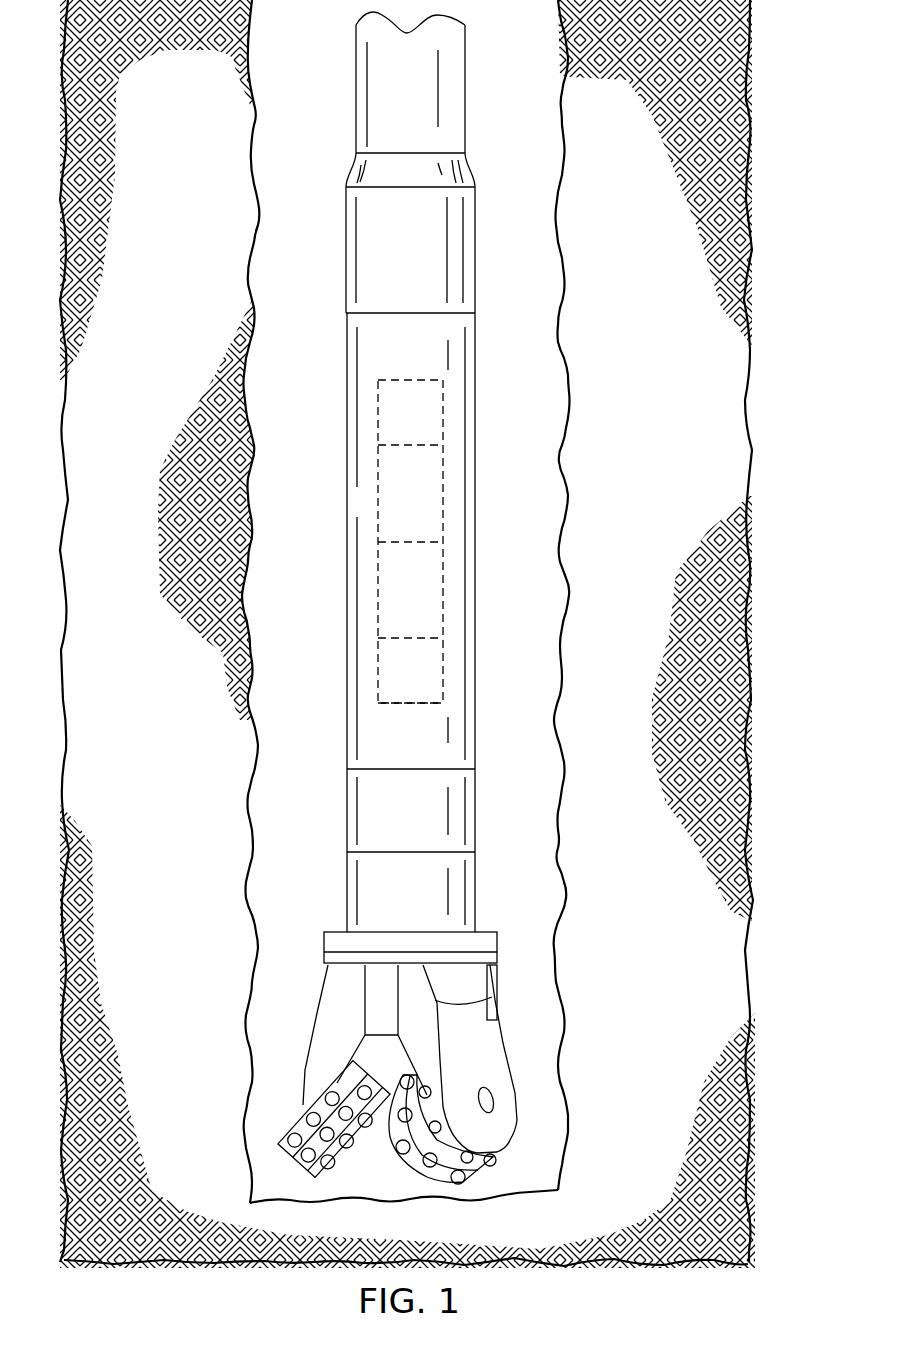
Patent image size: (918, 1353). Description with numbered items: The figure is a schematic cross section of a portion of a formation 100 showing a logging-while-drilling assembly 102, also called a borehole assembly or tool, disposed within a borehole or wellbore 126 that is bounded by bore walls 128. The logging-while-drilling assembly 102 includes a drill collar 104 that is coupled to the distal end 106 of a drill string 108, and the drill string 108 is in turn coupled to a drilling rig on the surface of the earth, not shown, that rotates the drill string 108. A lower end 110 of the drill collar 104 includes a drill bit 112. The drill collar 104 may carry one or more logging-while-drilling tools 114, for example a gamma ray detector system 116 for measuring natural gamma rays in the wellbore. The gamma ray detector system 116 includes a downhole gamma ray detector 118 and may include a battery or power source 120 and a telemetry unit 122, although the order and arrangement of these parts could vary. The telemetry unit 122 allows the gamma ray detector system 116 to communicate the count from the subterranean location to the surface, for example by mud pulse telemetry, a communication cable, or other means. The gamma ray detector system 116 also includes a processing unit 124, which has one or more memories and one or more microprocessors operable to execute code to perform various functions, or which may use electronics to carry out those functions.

The formation 100 is at (681, 450).
The logging-while-drilling assembly 102 is at (364, 598).
The drill collar 104 is at (478, 260).
The distal end 106 is at (350, 173).
The drill string 108 is at (467, 103).
The lower end 110 is at (330, 930).
The drill bit 112 is at (315, 1062).
The logging-while-drilling tool 114 is at (477, 362).
The gamma ray detector system 116 is at (362, 541).
The downhole gamma ray detector 118 is at (431, 509).
The power source 120 is at (431, 428).
The telemetry unit 122 is at (431, 687).
The processing unit 124 is at (431, 606).
The borehole 126 is at (406, 601).
The bore walls 128 is at (558, 24).